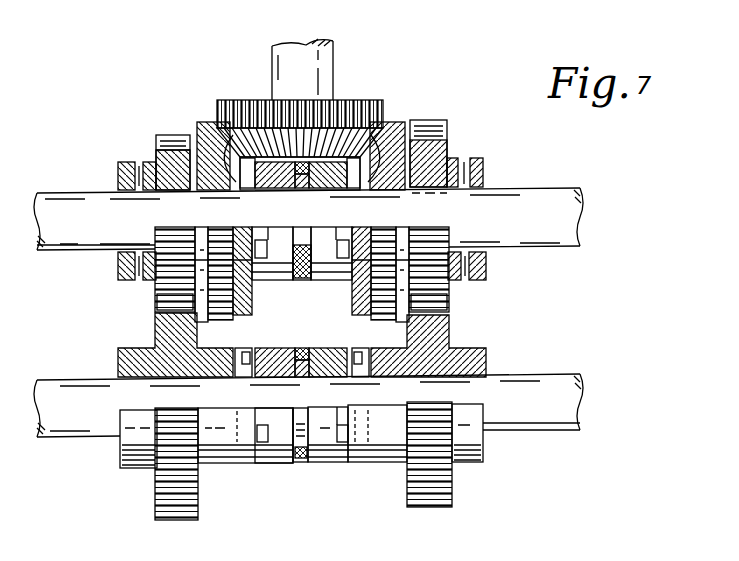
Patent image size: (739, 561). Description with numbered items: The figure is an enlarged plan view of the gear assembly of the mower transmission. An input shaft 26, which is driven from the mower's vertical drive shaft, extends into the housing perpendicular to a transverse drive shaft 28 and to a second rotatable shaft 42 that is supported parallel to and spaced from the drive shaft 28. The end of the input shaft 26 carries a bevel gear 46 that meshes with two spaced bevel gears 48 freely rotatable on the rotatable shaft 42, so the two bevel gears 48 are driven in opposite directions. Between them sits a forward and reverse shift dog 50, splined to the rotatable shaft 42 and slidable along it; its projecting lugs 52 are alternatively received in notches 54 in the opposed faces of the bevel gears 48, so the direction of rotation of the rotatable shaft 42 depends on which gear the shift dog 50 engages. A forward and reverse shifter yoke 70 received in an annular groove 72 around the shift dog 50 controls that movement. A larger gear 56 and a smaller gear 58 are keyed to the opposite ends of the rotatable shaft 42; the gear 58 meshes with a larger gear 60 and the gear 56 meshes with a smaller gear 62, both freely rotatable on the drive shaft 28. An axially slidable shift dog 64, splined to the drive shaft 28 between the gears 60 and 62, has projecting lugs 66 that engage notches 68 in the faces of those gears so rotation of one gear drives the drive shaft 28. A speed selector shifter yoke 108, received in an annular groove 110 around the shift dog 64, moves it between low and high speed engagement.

The input shaft 26 is at (282, 45).
The drive shaft 28 is at (549, 380).
The second rotatable shaft 42 is at (573, 212).
The bevel gear 46 is at (344, 99).
The spaced bevel gears 48 is at (197, 124).
The forward and reverse shift dog 50 is at (288, 265).
The projecting lugs 52 is at (143, 260).
The notches 54 is at (239, 100).
The gear 56 is at (428, 144).
The gear 58 is at (168, 162).
The gear 60 is at (168, 483).
The gear 62 is at (453, 483).
The shift dog 64 is at (273, 466).
The projecting lugs 66 is at (350, 349).
The notches 68 is at (247, 352).
The forward and reverse shifter yoke 70 is at (297, 268).
The annular groove 72 is at (320, 250).
The speed selector shifter yoke 108 is at (300, 463).
The annular groove 110 is at (310, 465).